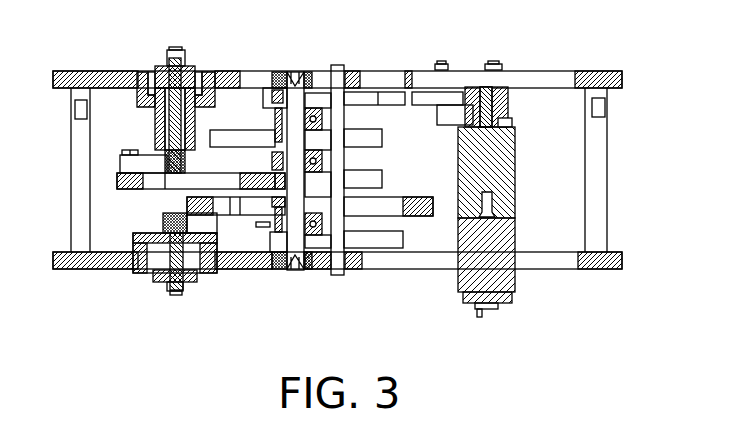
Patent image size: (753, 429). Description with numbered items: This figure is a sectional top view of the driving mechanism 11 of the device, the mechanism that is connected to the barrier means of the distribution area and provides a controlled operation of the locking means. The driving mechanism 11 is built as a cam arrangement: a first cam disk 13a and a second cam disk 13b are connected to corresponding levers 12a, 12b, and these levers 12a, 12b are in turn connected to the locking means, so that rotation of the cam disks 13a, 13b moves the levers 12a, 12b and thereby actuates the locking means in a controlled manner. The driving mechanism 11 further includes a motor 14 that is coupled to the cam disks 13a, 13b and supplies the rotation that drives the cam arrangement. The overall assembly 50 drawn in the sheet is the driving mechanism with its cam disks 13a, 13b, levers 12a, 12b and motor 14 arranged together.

The driving mechanism 11 is at (113, 213).
The lever 12a is at (137, 163).
The lever 12b is at (203, 222).
The first cam disk 13a is at (248, 138).
The second cam disk 13b is at (390, 205).
The motor 14 is at (497, 287).
The assembly 50 is at (359, 179).